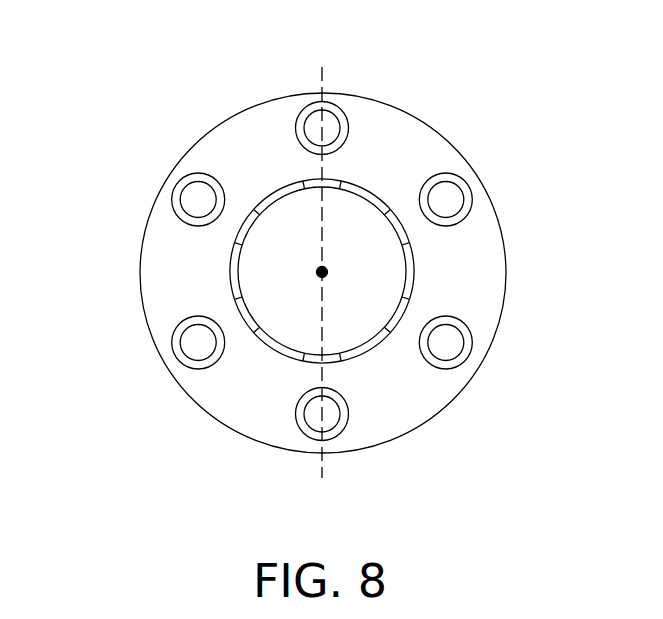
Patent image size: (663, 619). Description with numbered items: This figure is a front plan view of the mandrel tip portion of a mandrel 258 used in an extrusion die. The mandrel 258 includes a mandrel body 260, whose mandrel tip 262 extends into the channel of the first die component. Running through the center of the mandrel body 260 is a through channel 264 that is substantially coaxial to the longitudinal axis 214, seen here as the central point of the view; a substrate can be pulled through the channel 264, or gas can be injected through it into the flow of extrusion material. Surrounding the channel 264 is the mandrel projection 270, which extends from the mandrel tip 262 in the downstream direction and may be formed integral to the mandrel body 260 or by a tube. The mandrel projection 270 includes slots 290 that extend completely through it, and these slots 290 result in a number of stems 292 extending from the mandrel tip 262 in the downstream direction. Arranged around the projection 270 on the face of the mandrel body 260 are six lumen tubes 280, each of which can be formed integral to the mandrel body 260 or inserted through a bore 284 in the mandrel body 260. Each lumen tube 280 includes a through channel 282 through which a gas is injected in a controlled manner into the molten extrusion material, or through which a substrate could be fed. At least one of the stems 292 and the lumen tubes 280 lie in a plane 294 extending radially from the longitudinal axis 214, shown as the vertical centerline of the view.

The longitudinal axis 214 is at (327, 270).
The mandrel 258 is at (566, 82).
The mandrel body 260 is at (478, 182).
The mandrel tip 262 is at (157, 270).
The through channel 264 is at (300, 327).
The mandrel projection 270 is at (248, 232).
The lumen tube 280 is at (348, 132).
The through channel 282 is at (330, 125).
The bore 284 is at (294, 140).
The slot 290 is at (275, 197).
The stem 292 is at (308, 183).
The plane 294 is at (318, 78).